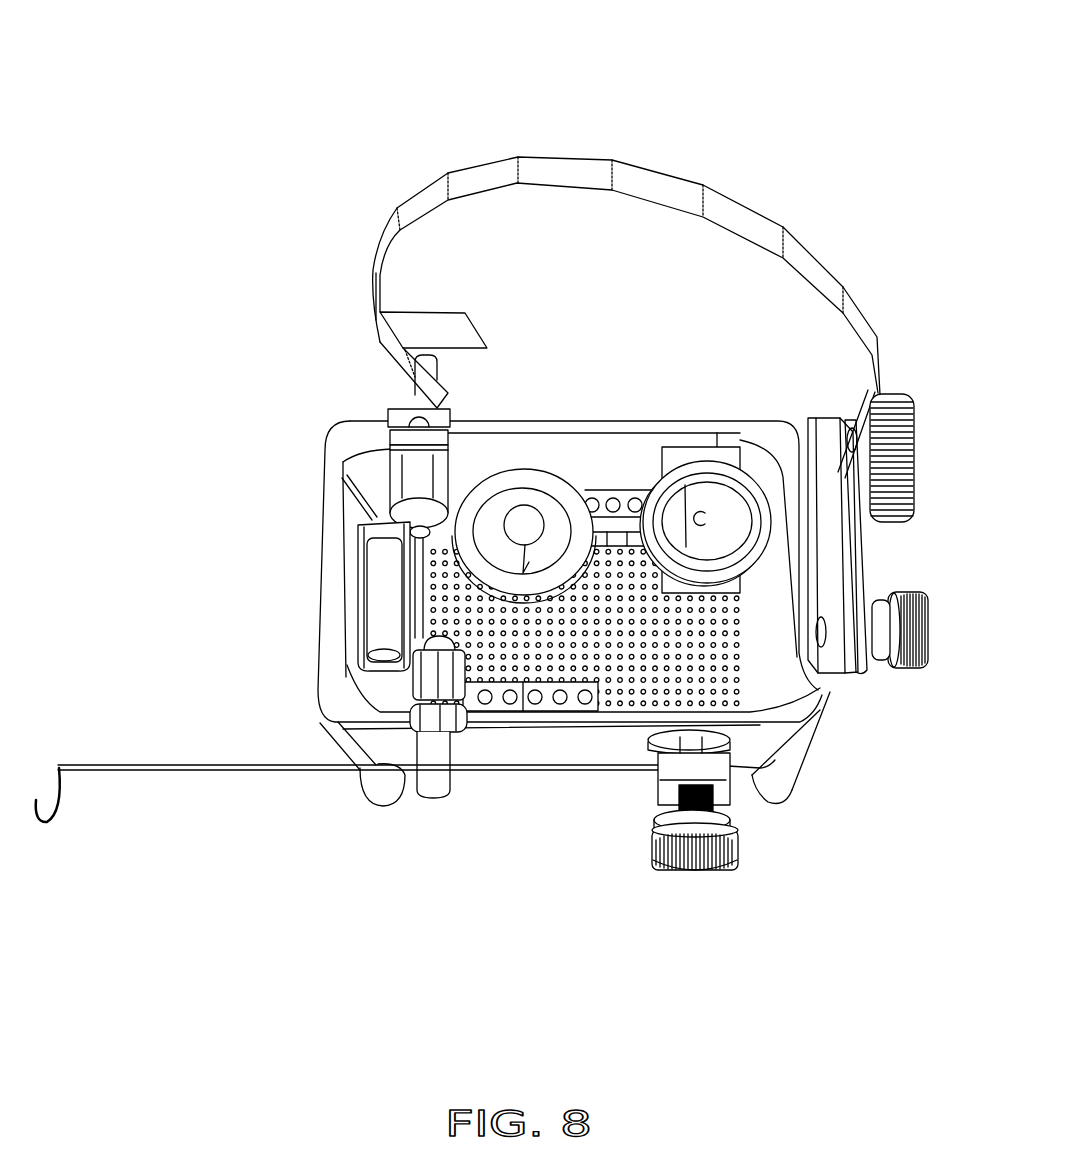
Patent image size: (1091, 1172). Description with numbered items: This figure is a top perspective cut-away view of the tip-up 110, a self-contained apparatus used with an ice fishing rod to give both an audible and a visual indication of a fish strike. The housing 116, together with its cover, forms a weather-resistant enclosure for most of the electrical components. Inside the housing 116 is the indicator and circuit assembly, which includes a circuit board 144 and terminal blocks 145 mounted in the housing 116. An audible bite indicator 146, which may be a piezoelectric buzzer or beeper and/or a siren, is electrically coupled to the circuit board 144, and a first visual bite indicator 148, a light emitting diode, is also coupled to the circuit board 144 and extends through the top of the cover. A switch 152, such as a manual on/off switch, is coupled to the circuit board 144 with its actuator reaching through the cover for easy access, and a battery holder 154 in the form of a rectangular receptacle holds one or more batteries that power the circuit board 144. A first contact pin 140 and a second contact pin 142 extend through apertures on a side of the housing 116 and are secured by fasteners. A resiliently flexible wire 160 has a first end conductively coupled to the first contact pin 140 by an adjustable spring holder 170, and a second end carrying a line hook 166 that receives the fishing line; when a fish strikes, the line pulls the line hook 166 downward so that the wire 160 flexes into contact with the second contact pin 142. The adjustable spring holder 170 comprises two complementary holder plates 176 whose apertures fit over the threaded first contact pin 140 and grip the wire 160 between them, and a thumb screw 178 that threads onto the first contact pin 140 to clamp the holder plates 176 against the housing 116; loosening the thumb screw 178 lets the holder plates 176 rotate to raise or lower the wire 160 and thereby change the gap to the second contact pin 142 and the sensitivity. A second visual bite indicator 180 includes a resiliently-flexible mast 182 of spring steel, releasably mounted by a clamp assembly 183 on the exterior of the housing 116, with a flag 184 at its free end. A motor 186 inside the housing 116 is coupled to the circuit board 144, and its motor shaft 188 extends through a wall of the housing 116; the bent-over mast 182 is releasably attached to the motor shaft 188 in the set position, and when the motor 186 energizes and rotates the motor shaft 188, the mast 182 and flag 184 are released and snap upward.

The tip-up 110 is at (838, 48).
The housing 116 is at (595, 419).
The first contact pin 140 is at (683, 793).
The second contact pin 142 is at (432, 800).
The circuit board 144 is at (395, 607).
The terminal blocks 145 is at (545, 700).
The audible bite indicator 146 is at (413, 598).
The first visual bite indicator 148 is at (537, 502).
The switch 152 is at (718, 510).
The battery holder 154 is at (362, 532).
The resiliently flexible wire 160 is at (295, 778).
The line hook 166 is at (60, 822).
The adjustable spring holder 170 is at (765, 853).
The holder plates 176 is at (707, 770).
The thumb screw 178 is at (693, 870).
The second visual bite indicator 180 is at (778, 186).
The resiliently-flexible mast 182 is at (810, 260).
The clamp assembly 183 is at (932, 384).
The flag 184 is at (430, 318).
The motor 186 is at (400, 484).
The motor shaft 188 is at (412, 397).